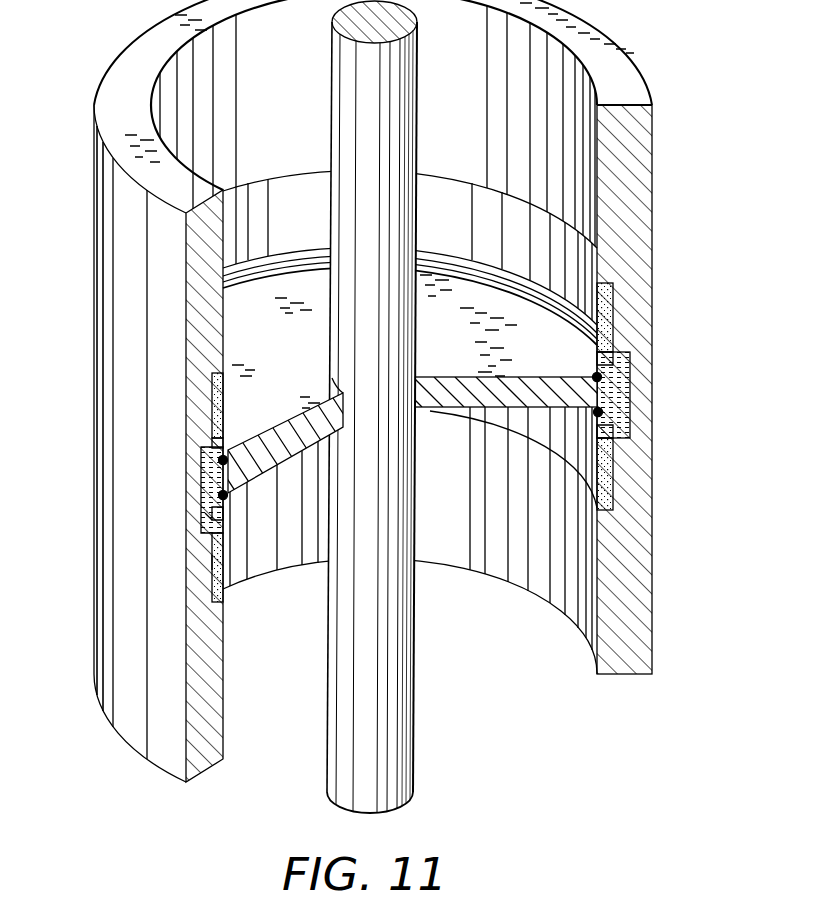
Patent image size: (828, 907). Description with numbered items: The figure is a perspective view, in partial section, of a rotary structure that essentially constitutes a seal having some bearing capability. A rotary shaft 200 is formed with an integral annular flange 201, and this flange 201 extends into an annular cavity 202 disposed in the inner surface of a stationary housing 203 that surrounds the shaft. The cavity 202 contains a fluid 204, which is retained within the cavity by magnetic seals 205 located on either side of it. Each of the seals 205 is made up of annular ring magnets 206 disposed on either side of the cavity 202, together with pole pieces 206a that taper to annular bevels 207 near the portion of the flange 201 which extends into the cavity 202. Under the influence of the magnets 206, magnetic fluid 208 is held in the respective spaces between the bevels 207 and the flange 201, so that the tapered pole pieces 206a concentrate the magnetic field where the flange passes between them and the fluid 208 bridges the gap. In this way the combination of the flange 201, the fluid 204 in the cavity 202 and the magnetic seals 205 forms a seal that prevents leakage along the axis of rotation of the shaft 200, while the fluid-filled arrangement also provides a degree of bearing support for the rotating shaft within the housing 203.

The rotary shaft 200 is at (414, 764).
The annular flange 201 is at (290, 356).
The annular cavity 202 is at (205, 477).
The stationary housing 203 is at (131, 41).
The fluid 204 is at (205, 513).
The magnetic seals 205 is at (203, 566).
The annular ring magnets 206 is at (221, 415).
The pole pieces 206a is at (626, 417).
The annular bevels 207 is at (594, 376).
The magnetic fluid 208 is at (226, 457).